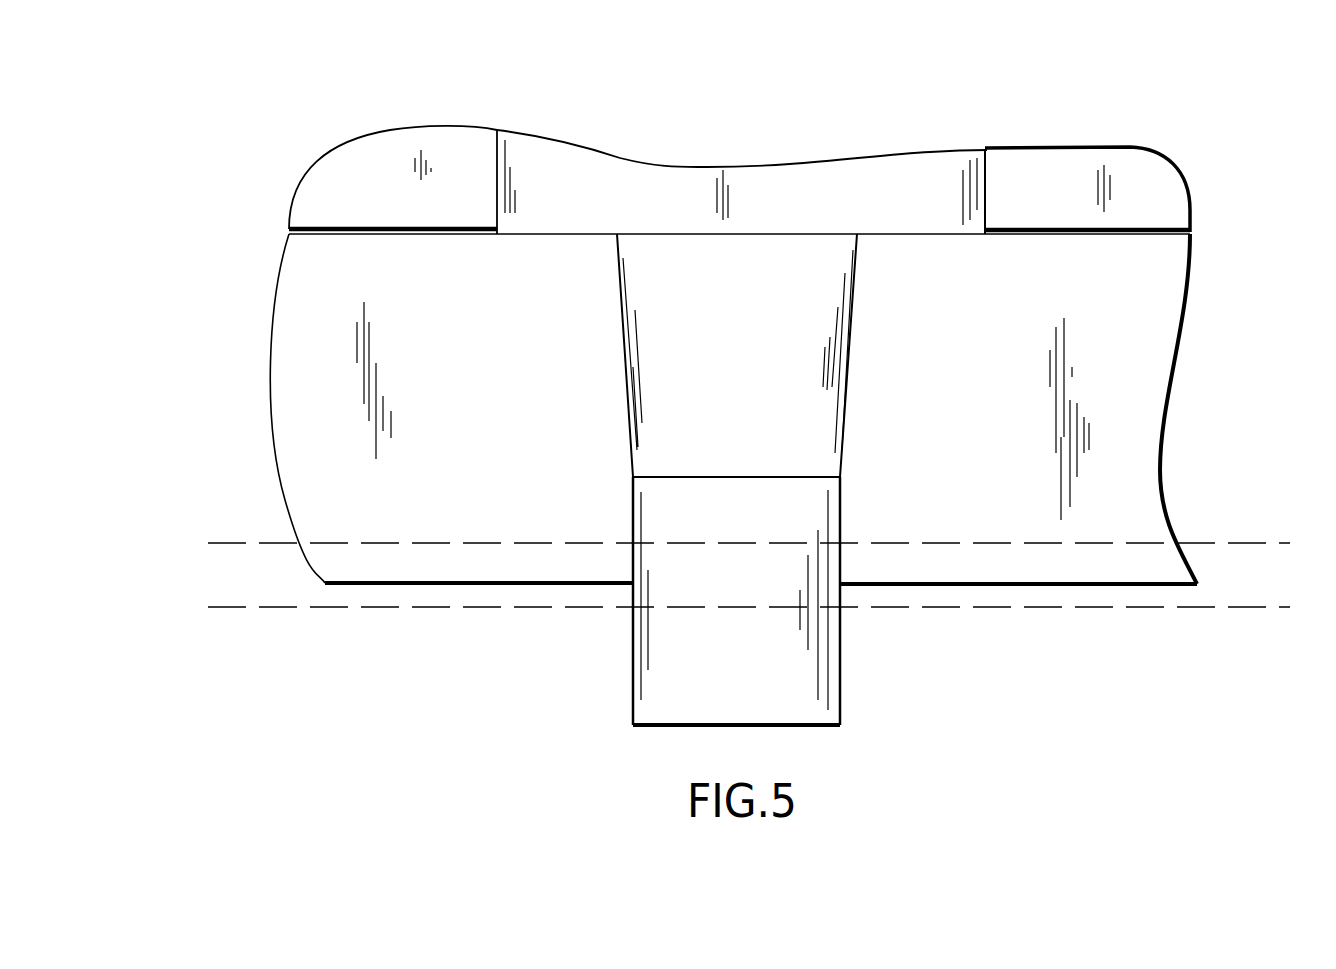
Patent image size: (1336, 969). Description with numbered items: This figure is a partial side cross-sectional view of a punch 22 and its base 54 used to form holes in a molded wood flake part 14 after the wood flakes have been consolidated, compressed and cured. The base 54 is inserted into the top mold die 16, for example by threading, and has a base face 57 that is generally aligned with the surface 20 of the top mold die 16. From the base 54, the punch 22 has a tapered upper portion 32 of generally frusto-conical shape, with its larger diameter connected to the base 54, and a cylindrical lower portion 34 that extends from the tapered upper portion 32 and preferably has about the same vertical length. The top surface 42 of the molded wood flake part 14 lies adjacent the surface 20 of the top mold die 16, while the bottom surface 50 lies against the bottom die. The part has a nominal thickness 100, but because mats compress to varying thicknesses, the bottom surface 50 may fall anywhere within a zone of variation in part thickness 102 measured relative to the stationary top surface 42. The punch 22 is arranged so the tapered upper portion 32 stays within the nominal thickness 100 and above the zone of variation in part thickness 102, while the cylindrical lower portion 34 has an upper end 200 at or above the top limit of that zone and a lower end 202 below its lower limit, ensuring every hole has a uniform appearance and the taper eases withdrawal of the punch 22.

The molded wood flake part 14 is at (786, 409).
The top mold die 16 is at (691, 202).
The surface of the top mold die 20 is at (377, 228).
The punch 22 is at (768, 531).
The tapered upper portion 32 is at (807, 417).
The cylindrical lower portion 34 is at (813, 505).
The top surface of the molded wood flake part 42 is at (372, 235).
The bottom surface of the molded wood flake part 50 is at (392, 581).
The base 54 is at (910, 175).
The base face 57 is at (923, 237).
The nominal thickness 100 is at (454, 581).
The zone of variation in part thickness 102 is at (221, 500).
The upper end 200 is at (665, 477).
The lower end 202 is at (665, 730).